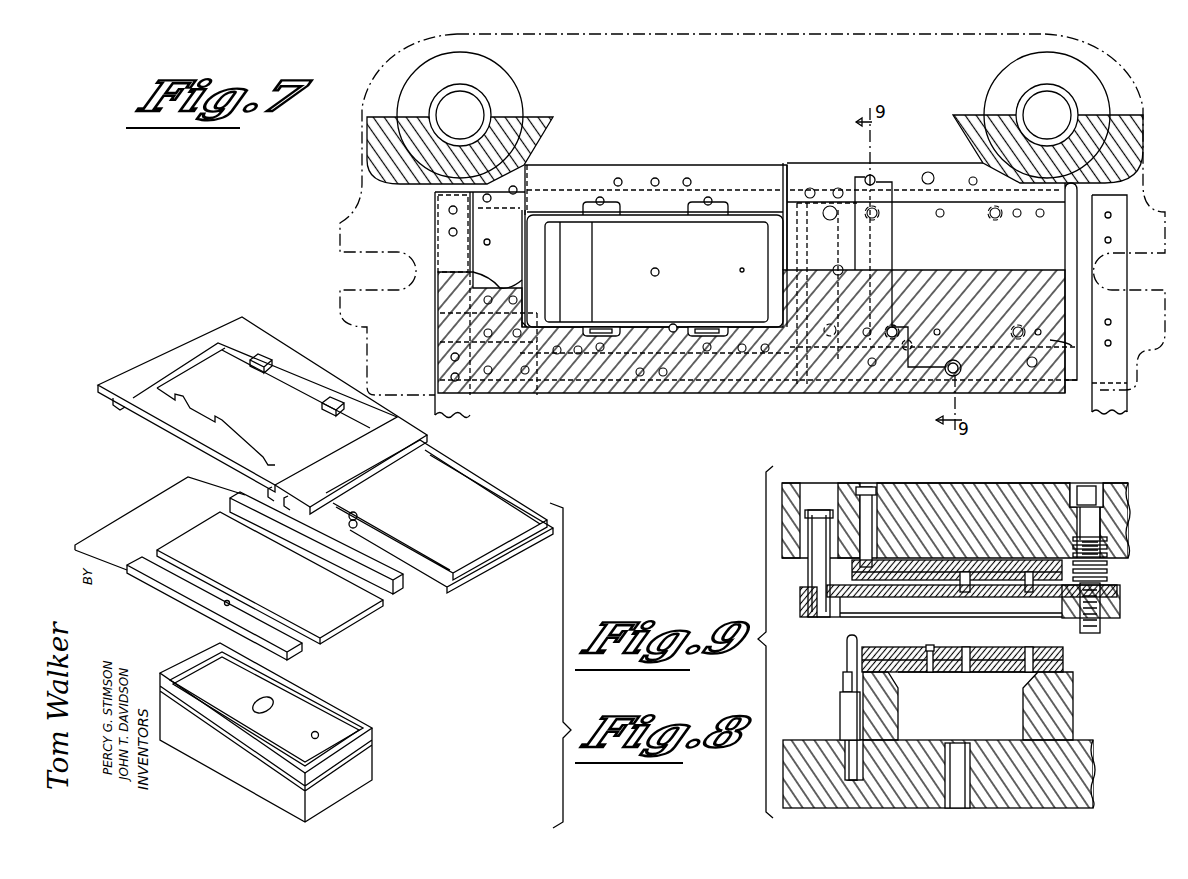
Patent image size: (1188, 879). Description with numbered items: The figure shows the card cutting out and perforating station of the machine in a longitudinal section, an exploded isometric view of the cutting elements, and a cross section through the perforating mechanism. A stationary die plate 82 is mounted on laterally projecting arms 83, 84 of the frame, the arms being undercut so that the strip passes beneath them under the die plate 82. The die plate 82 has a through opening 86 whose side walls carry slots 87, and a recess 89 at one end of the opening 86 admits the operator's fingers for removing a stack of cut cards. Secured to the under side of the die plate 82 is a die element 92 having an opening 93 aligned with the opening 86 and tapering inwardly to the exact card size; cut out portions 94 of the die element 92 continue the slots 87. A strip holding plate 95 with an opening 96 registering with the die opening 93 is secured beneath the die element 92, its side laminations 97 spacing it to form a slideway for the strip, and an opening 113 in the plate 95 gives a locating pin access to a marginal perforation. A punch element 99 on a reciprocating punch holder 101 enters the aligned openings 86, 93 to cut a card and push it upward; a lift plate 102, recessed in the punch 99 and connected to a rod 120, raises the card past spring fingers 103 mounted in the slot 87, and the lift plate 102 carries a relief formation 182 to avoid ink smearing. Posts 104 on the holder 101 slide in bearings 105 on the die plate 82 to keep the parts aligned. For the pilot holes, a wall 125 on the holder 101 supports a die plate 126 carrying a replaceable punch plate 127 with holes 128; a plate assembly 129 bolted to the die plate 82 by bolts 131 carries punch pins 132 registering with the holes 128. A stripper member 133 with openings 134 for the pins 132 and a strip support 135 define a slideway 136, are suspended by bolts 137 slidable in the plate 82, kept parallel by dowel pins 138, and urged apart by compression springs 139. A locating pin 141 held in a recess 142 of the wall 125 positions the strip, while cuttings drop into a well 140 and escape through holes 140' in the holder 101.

In FIG. 7, the stationary die plate 82 is at (340, 222).
In FIG. 9, the stationary die plate 82 is at (914, 484).
In FIG. 7, the laterally projecting arm 83 is at (1118, 272).
In FIG. 7, the laterally projecting arm 84 is at (470, 413).
In FIG. 7, the through opening 86 is at (672, 324).
In FIG. 7, the slot 87 is at (612, 327).
In FIG. 7, the recess 89 is at (498, 282).
In FIG. 7, the die element 92 is at (670, 165).
In FIG. 8, the die element 92 is at (180, 336).
In FIG. 7, the opening 93 is at (520, 228).
In FIG. 8, the opening 93 is at (200, 356).
In FIG. 7, the cut out portion 94 is at (603, 210).
In FIG. 8, the cut out portion 94 is at (262, 356).
In FIG. 8, the strip holding plate 95 is at (153, 503).
In FIG. 7, the opening 96 is at (521, 243).
In FIG. 8, the opening 96 is at (207, 525).
In FIG. 8, the side lamination 97 is at (398, 592).
In FIG. 7, the punch element 99 is at (768, 240).
In FIG. 8, the punch element 99 is at (370, 764).
In FIG. 9, the punch holder 101 is at (1090, 780).
In FIG. 7, the lift plate 102 is at (652, 235).
In FIG. 7, the spring finger 103 is at (708, 327).
In FIG. 7, the post 104 is at (470, 108).
In FIG. 7, the bearing 105 is at (513, 102).
In FIG. 8, the opening 113 is at (228, 603).
In FIG. 7, the rod 120 is at (660, 271).
In FIG. 9, the wall 125 is at (1072, 729).
In FIG. 9, the die plate 126 is at (1065, 671).
In FIG. 9, the punch plate 127 is at (1065, 654).
In FIG. 9, the hole 128 is at (1028, 650).
In FIG. 7, the plate assembly 129 is at (953, 195).
In FIG. 8, the plate assembly 129 is at (480, 483).
In FIG. 9, the plate assembly 129 is at (846, 584).
In FIG. 7, the bolt 131 is at (893, 328).
In FIG. 9, the bolt 131 is at (865, 486).
In FIG. 9, the punch pin 132 is at (962, 590).
In FIG. 7, the stripper member 133 is at (910, 163).
In FIG. 8, the stripper member 133 is at (447, 593).
In FIG. 9, the stripper member 133 is at (806, 592).
In FIG. 9, the opening 134 is at (1031, 592).
In FIG. 7, the strip support 135 is at (1077, 382).
In FIG. 9, the strip support 135 is at (808, 616).
In FIG. 7, the slideway 136 is at (1075, 347).
In FIG. 9, the slideway 136 is at (858, 602).
In FIG. 7, the bolt 137 is at (870, 175).
In FIG. 9, the bolt 137 is at (1080, 500).
In FIG. 7, the dowel pin 138 is at (950, 375).
In FIG. 9, the dowel pin 138 is at (847, 655).
In FIG. 9, the compression spring 139 is at (1101, 578).
In FIG. 9, the well 140 is at (968, 694).
In FIG. 9, the hole 140' is at (983, 786).
In FIG. 7, the locating pin 141 is at (903, 350).
In FIG. 9, the locating pin 141 is at (845, 680).
In FIG. 9, the recess 142 is at (842, 692).
In FIG. 7, the formation 182 is at (580, 255).